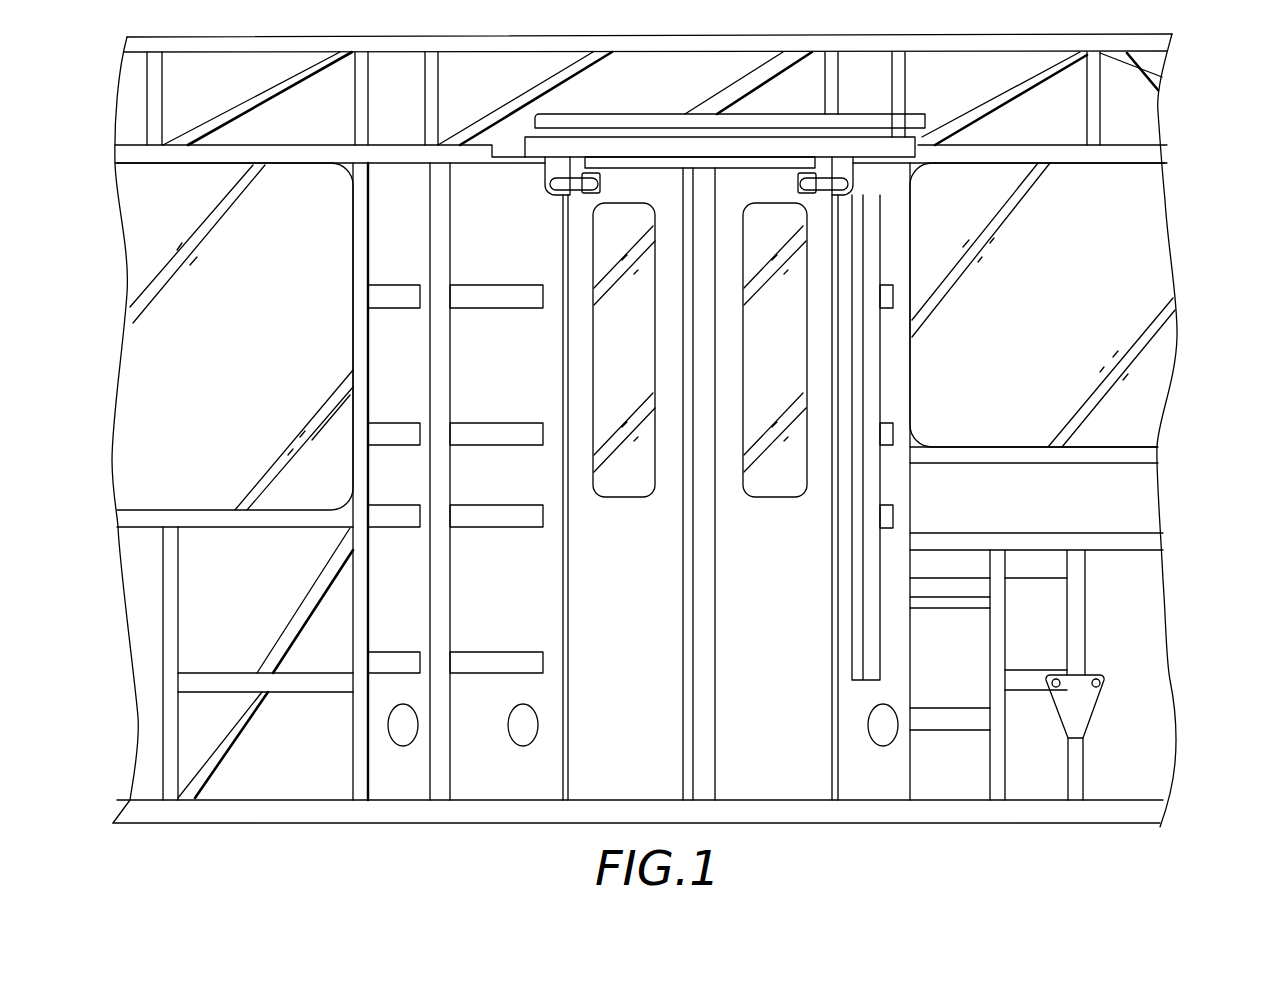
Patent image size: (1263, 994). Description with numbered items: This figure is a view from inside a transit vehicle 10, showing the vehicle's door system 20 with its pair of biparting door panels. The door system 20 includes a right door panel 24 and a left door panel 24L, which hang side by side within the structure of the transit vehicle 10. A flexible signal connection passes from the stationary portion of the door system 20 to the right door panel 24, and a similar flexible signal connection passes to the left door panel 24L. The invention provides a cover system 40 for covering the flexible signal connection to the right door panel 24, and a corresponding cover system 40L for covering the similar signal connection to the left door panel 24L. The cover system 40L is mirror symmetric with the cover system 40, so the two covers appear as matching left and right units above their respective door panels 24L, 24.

The transit vehicle 10 is at (1244, 184).
The door system 20 is at (955, 358).
The left door panel 24L is at (628, 484).
The right door panel 24 is at (776, 484).
The cover system 40L is at (548, 206).
The cover system 40 is at (874, 195).